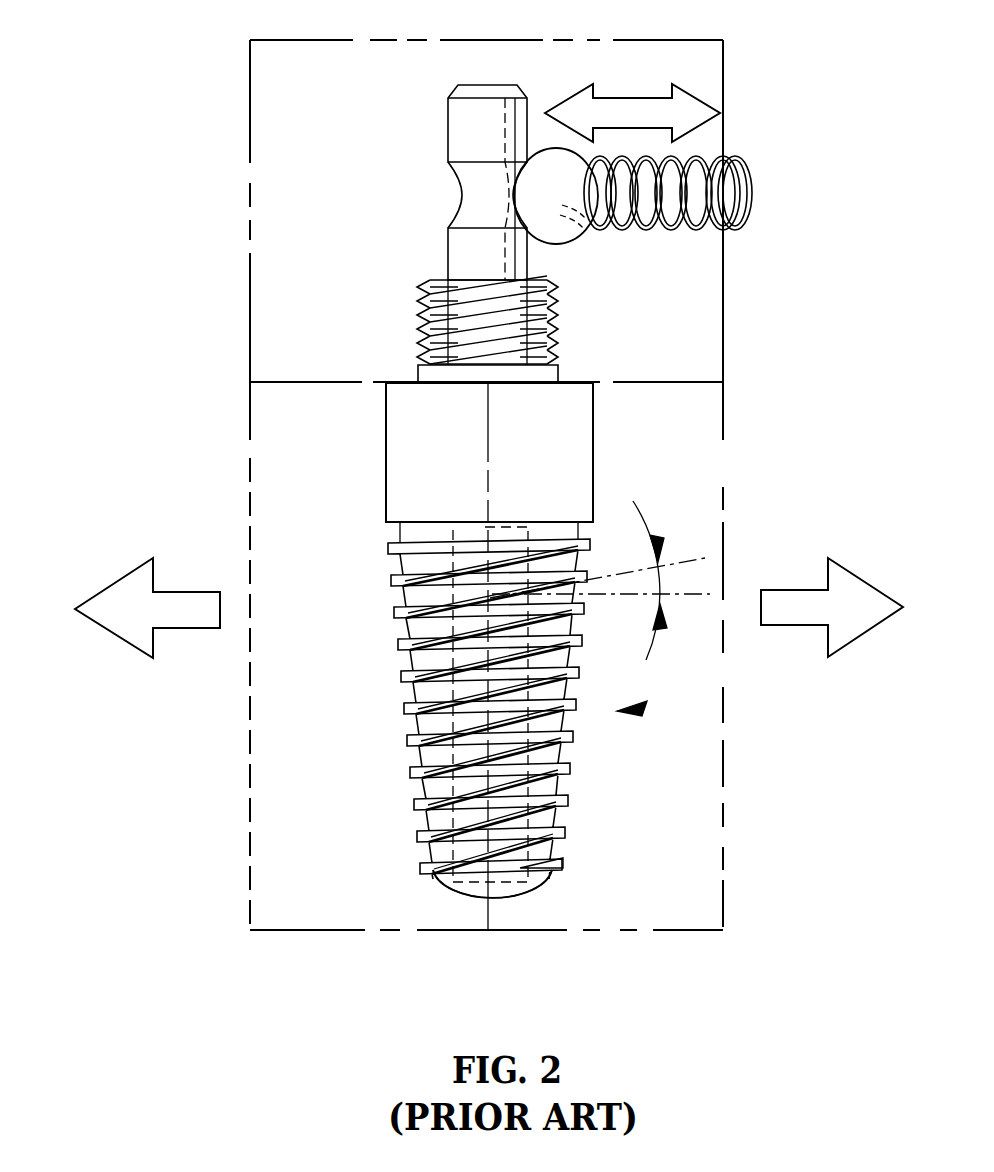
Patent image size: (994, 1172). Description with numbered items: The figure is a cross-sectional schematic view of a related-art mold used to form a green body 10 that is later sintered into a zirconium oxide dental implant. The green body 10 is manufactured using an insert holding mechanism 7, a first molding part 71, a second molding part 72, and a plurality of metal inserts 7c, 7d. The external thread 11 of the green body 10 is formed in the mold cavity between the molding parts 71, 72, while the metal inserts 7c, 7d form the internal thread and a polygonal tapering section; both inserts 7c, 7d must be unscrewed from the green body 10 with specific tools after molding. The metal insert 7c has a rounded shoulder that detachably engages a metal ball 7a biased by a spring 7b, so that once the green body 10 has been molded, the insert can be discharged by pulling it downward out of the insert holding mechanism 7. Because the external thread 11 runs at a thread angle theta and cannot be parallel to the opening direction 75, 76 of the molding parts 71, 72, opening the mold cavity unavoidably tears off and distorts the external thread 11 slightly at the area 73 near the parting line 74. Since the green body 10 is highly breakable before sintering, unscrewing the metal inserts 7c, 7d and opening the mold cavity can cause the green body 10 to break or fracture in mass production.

The insert holding mechanism 7 is at (712, 53).
The metal ball 7a is at (582, 233).
The spring 7b is at (747, 170).
The metal insert 7c is at (462, 135).
The metal insert 7d is at (430, 325).
The green body 10 is at (617, 711).
The external thread 11 is at (400, 718).
The first molding part 71 is at (275, 472).
The second molding part 72 is at (703, 468).
The area near the parting line 73 is at (472, 883).
The parting line 74 is at (488, 467).
The opening direction 75 is at (128, 618).
The opening direction 76 is at (850, 617).